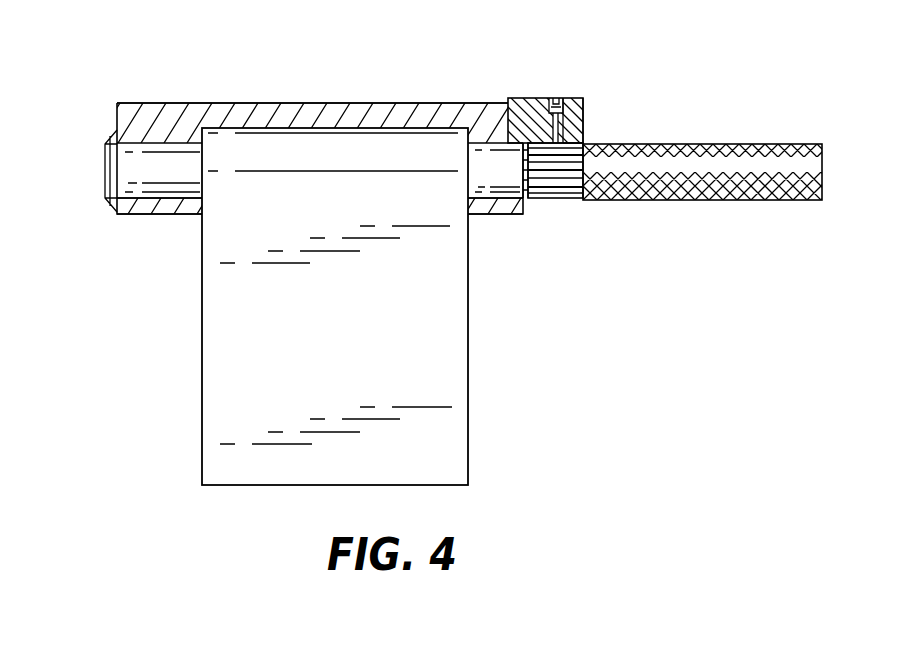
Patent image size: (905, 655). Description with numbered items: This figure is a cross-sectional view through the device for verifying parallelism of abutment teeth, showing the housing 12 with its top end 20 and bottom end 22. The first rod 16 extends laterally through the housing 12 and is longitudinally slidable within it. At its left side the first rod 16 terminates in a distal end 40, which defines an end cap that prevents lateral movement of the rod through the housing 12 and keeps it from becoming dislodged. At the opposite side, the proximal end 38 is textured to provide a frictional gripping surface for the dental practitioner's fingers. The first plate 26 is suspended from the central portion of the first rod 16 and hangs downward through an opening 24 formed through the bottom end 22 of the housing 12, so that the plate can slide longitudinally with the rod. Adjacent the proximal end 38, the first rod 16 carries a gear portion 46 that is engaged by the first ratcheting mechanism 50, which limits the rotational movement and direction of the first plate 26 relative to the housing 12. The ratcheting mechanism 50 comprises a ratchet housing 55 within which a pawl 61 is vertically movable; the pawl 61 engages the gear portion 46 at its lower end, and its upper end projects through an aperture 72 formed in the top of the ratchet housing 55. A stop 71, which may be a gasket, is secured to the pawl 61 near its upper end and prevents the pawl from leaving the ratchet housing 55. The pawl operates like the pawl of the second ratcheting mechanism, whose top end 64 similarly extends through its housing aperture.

The housing 12 is at (274, 127).
The top end 20 is at (228, 103).
The distal end 40 is at (105, 165).
The opening 24 is at (196, 216).
The bottom end 22 is at (485, 216).
The first rod 16 is at (511, 192).
The aperture 72 is at (548, 93).
The ratchet housing 55 is at (565, 98).
The stop 71 is at (583, 112).
The first ratcheting mechanism 50 is at (583, 125).
The pawl 61 is at (583, 135).
The gear portion 46 is at (570, 198).
The proximal end 38 is at (789, 200).
The first plate 26 is at (450, 470).
The top end 64 is at (347, 648).